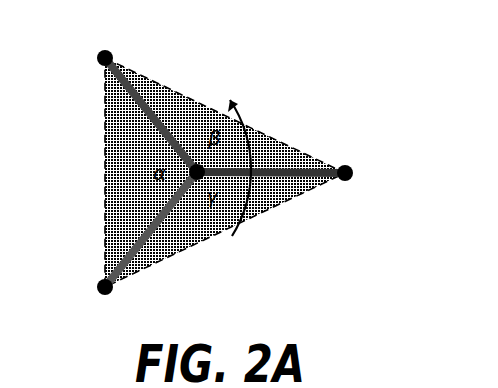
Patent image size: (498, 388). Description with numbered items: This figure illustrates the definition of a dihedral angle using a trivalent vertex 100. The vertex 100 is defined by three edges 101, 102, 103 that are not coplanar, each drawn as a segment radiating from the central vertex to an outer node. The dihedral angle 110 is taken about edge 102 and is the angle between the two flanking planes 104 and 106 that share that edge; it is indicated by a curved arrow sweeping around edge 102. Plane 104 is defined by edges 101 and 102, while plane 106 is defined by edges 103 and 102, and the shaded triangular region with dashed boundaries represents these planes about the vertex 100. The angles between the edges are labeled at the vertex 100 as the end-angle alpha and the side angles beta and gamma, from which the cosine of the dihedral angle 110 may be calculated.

The trivalent vertex 100 is at (195, 160).
The edge 101 is at (132, 93).
The edge 102 is at (313, 167).
The edge 103 is at (132, 254).
The plane 104 is at (273, 148).
The plane 106 is at (167, 243).
The dihedral angle 110 is at (240, 110).